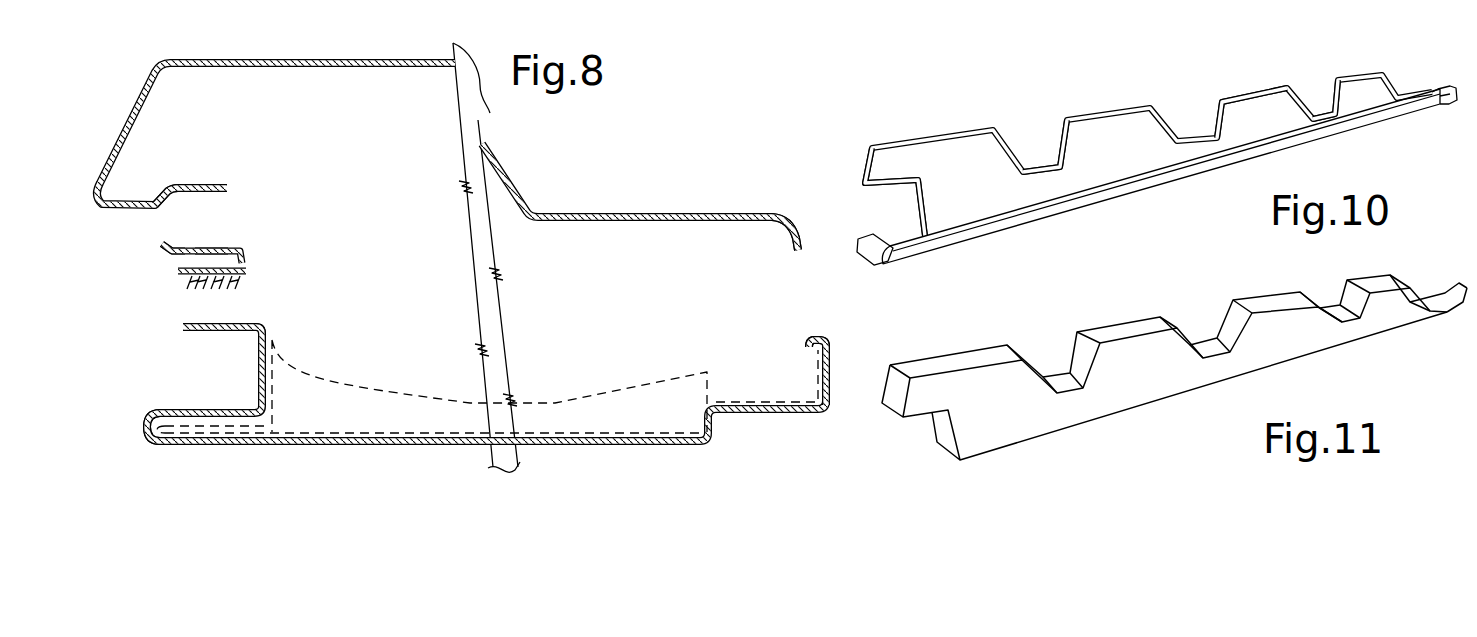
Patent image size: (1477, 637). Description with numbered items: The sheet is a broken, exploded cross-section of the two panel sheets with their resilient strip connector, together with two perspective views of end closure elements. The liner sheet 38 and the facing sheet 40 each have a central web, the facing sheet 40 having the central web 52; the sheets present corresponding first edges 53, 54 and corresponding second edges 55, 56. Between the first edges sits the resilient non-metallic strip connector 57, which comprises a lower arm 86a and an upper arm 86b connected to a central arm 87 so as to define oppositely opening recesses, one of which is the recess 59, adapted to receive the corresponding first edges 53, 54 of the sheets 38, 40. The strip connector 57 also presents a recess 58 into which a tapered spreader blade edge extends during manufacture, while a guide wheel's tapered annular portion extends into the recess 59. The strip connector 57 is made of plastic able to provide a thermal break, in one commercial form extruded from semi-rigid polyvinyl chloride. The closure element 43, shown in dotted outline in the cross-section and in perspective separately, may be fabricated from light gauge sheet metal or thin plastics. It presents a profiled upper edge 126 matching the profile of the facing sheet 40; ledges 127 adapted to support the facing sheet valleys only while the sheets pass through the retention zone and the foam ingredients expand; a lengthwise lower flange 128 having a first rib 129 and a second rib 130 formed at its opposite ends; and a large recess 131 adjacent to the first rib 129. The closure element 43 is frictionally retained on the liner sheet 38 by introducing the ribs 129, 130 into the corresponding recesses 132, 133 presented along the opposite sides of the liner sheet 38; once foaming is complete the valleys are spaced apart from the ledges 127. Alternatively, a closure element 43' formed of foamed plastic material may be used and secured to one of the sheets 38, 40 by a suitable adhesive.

In FIG. 8, the liner sheet 38 is at (584, 448).
In FIG. 8, the facing sheet 40 is at (570, 214).
In FIG. 8, the closure element 43 is at (436, 386).
In FIG. 10, the closure element 43 is at (1148, 155).
In FIG. 11, the alternative closure element 43' is at (1174, 366).
In FIG. 8, the central web 52 is at (370, 70).
In FIG. 8, the first edge 53 is at (208, 330).
In FIG. 8, the first edge 54 is at (193, 183).
In FIG. 8, the second edge 55 is at (821, 341).
In FIG. 8, the second edge 56 is at (792, 249).
In FIG. 8, the strip connector 57 is at (248, 252).
In FIG. 8, the recess 58 is at (249, 268).
In FIG. 8, the recess 59 is at (172, 260).
In FIG. 8, the lower arm 86a is at (228, 288).
In FIG. 8, the upper arm 86b is at (208, 250).
In FIG. 8, the central arm 87 is at (190, 280).
In FIG. 10, the profiled upper edge 126 is at (1228, 94).
In FIG. 10, the ledges 127 is at (1050, 168).
In FIG. 10, the lower flange 128 is at (1135, 188).
In FIG. 8, the first rib 129 is at (158, 446).
In FIG. 10, the first rib 129 is at (870, 249).
In FIG. 8, the second rib 130 is at (773, 404).
In FIG. 10, the second rib 130 is at (1452, 114).
In FIG. 10, the recess 131 is at (908, 203).
In FIG. 8, the recess 132 is at (228, 428).
In FIG. 8, the recess 133 is at (822, 372).